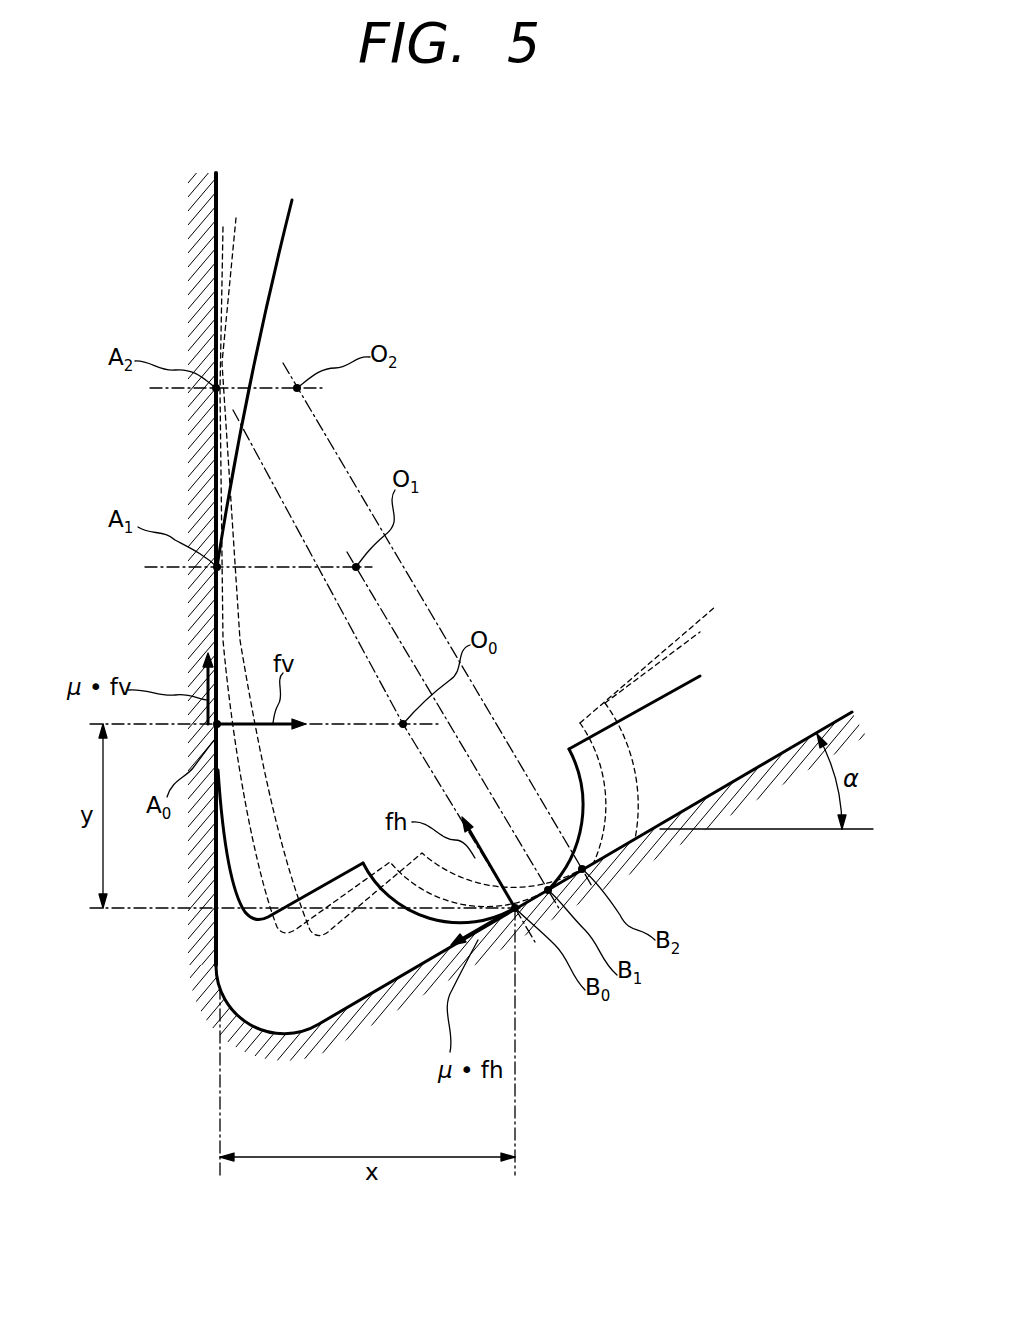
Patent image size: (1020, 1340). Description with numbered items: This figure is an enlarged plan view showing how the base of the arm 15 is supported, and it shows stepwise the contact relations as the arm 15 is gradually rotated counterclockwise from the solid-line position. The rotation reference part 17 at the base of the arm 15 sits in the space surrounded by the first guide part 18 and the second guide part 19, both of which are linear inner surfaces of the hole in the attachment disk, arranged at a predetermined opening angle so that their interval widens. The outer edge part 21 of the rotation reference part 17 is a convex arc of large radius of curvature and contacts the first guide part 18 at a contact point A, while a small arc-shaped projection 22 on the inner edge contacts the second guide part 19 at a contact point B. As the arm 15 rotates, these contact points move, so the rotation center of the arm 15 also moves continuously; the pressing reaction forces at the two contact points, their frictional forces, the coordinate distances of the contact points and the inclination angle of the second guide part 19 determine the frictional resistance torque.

The arm 15 is at (270, 290).
The rotation reference part 17 is at (665, 698).
The first guide part 18 is at (217, 196).
The second guide part 19 is at (793, 745).
The outer edge part 21 is at (235, 423).
The projection 22 is at (402, 893).